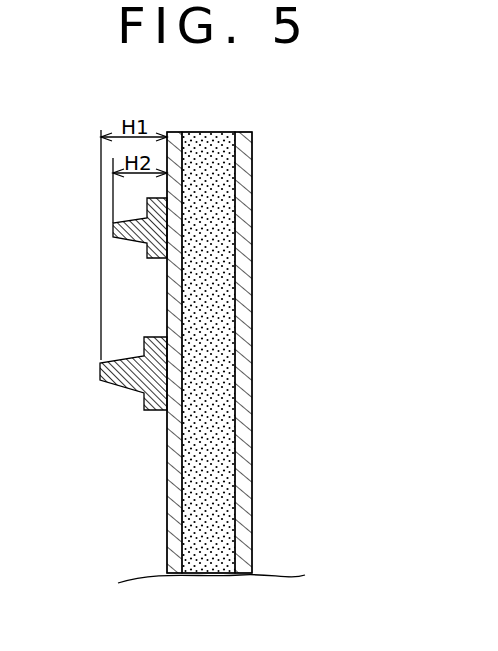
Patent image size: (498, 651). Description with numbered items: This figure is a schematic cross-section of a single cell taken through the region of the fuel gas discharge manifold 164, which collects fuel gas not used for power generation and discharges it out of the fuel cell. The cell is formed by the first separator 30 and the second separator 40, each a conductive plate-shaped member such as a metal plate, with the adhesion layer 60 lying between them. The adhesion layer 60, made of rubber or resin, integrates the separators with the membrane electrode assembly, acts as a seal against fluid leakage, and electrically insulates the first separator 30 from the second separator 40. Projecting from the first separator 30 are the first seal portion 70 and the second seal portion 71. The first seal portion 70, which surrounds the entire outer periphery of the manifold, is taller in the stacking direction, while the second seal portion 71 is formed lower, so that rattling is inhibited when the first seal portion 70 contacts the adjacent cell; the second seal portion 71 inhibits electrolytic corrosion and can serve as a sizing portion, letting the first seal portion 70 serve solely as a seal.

The fuel gas discharge manifold 164 is at (219, 88).
The first separator 30 is at (166, 488).
The second separator 40 is at (253, 480).
The adhesion layer 60 is at (212, 300).
The first seal portion 70 is at (130, 393).
The second seal portion 71 is at (141, 246).